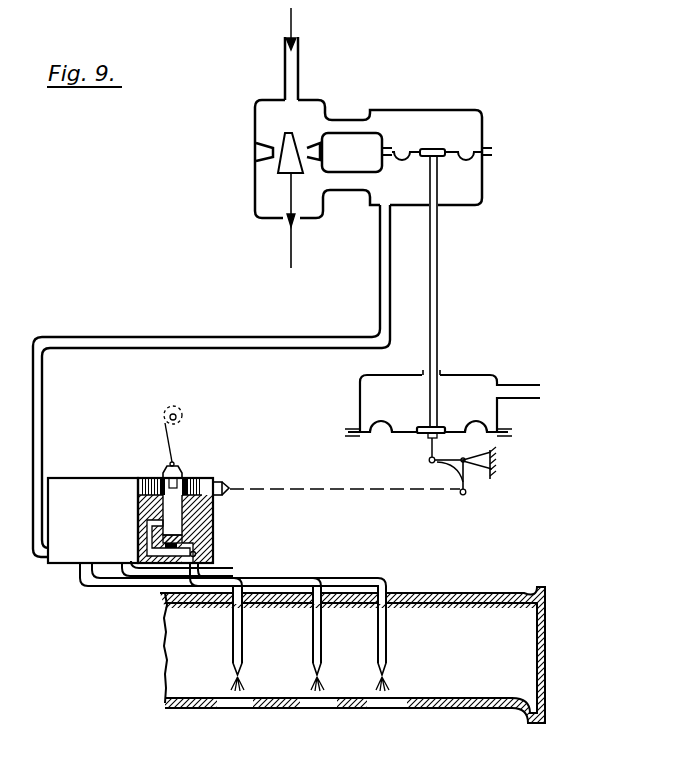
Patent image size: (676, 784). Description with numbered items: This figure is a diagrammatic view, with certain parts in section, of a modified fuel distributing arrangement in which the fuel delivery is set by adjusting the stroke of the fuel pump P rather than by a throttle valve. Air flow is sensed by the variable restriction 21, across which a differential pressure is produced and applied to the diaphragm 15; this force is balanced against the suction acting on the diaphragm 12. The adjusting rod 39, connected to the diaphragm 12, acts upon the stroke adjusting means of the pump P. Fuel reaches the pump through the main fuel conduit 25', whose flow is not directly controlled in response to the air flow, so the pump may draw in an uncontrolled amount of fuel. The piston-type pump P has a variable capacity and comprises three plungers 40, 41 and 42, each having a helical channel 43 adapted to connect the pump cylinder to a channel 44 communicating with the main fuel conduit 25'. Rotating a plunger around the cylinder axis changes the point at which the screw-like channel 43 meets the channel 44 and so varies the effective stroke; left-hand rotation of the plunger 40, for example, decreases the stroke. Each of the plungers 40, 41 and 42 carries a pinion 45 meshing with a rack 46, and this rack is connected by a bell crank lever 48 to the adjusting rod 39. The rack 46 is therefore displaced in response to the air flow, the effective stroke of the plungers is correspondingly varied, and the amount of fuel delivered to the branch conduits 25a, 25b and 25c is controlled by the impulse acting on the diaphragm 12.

The diaphragm 12 is at (427, 421).
The diaphragm 15 is at (393, 92).
The variable restriction 21 is at (283, 160).
The main fuel conduit 25' is at (211, 381).
The branch conduit 25a is at (251, 638).
The branch conduit 25b is at (330, 638).
The branch conduit 25c is at (396, 638).
The adjusting rod 39 is at (446, 457).
The bell crank lever 48 is at (465, 486).
The plunger 40 is at (227, 450).
The plunger 41 is at (172, 472).
The plunger 42 is at (183, 481).
The helical channel 43 is at (163, 524).
The channel 44 is at (150, 546).
The pinion 45 is at (163, 479).
The rack 46 is at (150, 481).
The fuel pump P is at (200, 523).